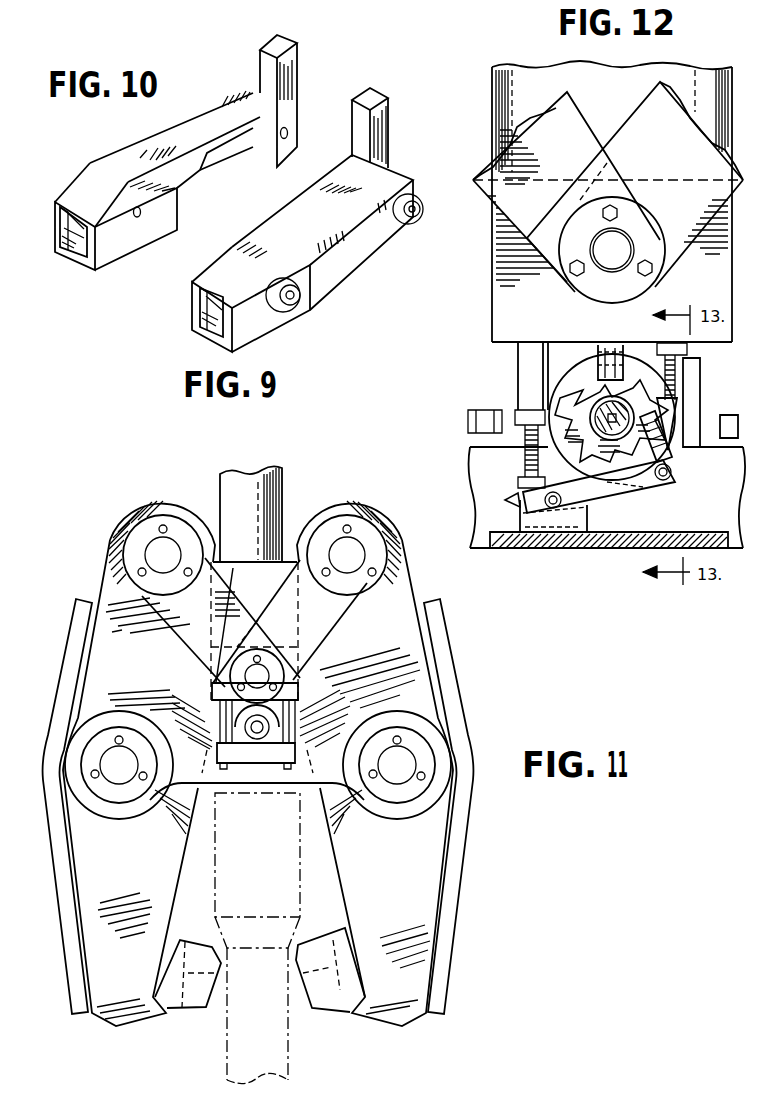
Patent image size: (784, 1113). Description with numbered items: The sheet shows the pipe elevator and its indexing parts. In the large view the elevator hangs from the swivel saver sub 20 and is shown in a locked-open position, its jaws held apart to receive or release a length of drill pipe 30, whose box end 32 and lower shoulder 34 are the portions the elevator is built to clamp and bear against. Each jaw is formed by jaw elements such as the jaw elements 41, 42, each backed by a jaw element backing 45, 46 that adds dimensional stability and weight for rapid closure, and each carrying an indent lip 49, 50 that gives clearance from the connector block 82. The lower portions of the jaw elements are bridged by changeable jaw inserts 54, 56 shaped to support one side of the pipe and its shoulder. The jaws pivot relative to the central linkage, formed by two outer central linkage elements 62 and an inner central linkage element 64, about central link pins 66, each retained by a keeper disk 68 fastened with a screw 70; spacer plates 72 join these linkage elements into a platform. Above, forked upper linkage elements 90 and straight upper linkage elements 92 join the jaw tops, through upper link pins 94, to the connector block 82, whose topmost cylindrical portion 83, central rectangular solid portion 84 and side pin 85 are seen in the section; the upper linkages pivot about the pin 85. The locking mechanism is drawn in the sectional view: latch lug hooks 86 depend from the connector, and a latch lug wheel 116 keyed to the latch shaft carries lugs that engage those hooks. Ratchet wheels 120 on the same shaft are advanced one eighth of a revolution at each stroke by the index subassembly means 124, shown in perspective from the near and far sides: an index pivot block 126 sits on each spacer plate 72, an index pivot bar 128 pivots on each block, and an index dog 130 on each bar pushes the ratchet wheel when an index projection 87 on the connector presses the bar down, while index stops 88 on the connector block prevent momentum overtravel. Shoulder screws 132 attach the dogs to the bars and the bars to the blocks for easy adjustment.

In FIG. 9, the swivel saver sub 20 is at (227, 490).
In FIG. 9, the drill pipe 30 is at (293, 1053).
In FIG. 9, the box end 32 is at (268, 870).
In FIG. 9, the shoulder 34 is at (300, 925).
In FIG. 9, the jaw element 41 is at (93, 917).
In FIG. 9, the jaw element 42 is at (428, 918).
In FIG. 9, the jaw element backing 45 is at (61, 873).
In FIG. 9, the jaw element backing 46 is at (452, 892).
In FIG. 9, the indent lip 49 is at (212, 683).
In FIG. 9, the indent lip 50 is at (303, 667).
In FIG. 9, the jaw insert 54 is at (200, 997).
In FIG. 9, the jaw insert 56 is at (323, 993).
In FIG. 9, the outer central linkage element 62 is at (327, 753).
In FIG. 12, the inner central linkage element 64 is at (482, 470).
In FIG. 9, the central link pin 66 is at (104, 762).
In FIG. 9, the keeper disk 68 is at (97, 734).
In FIG. 9, the screw 70 is at (93, 778).
In FIG. 12, the spacer plate 72 is at (603, 548).
In FIG. 9, the connector block 82 is at (233, 568).
In FIG. 12, the topmost cylindrical portion 83 is at (507, 120).
In FIG. 12, the central rectangular solid portion 84 is at (492, 273).
In FIG. 12, the pin 85 is at (612, 250).
In FIG. 9, the pin 85 is at (257, 676).
In FIG. 12, the latch lug hook 86 is at (603, 350).
In FIG. 12, the index projection 87 is at (507, 498).
In FIG. 12, the index stop 88 is at (677, 413).
In FIG. 12, the forked upper linkage element 90 is at (540, 208).
In FIG. 9, the forked upper linkage element 90 is at (184, 623).
In FIG. 12, the straight upper linkage element 92 is at (687, 225).
In FIG. 9, the straight upper linkage element 92 is at (328, 610).
In FIG. 9, the upper link pin 94 is at (163, 555).
In FIG. 12, the latch lug wheel 116 is at (587, 400).
In FIG. 12, the ratchet wheel 120 is at (563, 375).
In FIG. 10, the index subassembly means 124 is at (53, 189).
In FIG. 10, the index pivot block 126 is at (128, 230).
In FIG. 12, the index pivot block 126 is at (583, 517).
In FIG. 10, the index pivot bar 128 is at (173, 138).
In FIG. 12, the index pivot bar 128 is at (643, 488).
In FIG. 10, the index dog 130 is at (263, 65).
In FIG. 12, the index dog 130 is at (683, 452).
In FIG. 10, the shoulder screw 132 is at (283, 140).